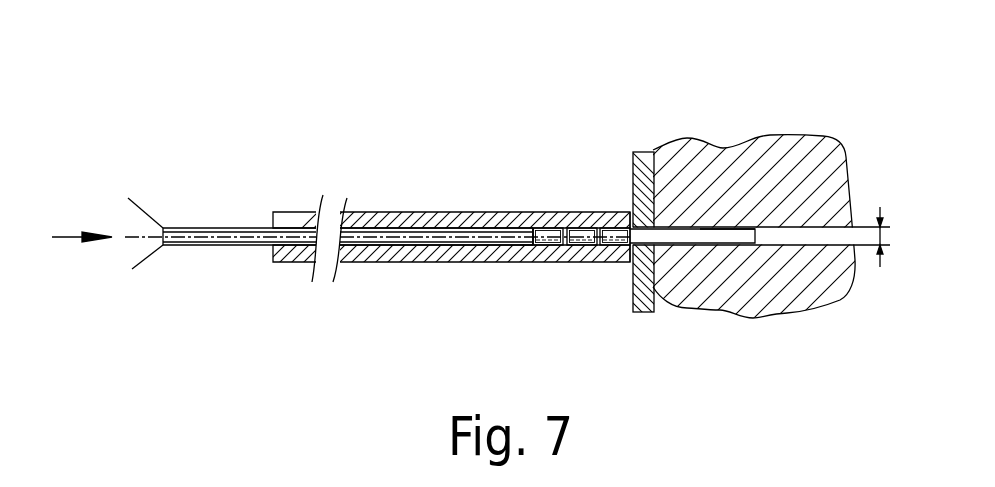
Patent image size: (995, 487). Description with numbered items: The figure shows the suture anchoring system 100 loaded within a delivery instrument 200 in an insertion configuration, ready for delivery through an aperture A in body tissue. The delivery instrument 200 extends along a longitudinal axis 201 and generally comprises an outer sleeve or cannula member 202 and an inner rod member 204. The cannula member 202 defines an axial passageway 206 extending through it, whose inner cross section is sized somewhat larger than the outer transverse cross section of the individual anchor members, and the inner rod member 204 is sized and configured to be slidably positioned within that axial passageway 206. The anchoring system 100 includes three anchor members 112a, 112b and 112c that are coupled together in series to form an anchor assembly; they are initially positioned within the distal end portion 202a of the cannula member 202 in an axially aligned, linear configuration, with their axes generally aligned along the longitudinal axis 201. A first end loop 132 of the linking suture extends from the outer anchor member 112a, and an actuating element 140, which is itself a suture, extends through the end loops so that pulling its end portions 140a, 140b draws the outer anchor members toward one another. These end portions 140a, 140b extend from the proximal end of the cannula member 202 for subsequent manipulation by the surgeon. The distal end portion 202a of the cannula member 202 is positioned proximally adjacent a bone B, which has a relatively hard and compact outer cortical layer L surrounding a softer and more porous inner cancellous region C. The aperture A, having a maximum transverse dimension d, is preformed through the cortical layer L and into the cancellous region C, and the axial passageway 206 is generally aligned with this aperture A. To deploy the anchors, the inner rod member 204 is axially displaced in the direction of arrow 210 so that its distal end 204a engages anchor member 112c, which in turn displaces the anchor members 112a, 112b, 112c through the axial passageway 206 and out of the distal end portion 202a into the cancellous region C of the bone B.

The suture anchoring system 100 is at (547, 183).
The outer anchor member 112a is at (615, 247).
The anchor member 112b is at (578, 247).
The outer anchor member 112c is at (537, 247).
The first end loop 132 is at (646, 213).
The actuating element 140 is at (577, 229).
The end portion of actuating element 140a is at (143, 212).
The end portion of actuating element 140b is at (150, 258).
The delivery instrument 200 is at (417, 160).
The longitudinal axis 201 is at (137, 236).
The cannula member 202 is at (372, 195).
The distal end portion of cannula member 202a is at (618, 180).
The inner rod member 204 is at (358, 213).
The distal end of inner rod member 204a is at (515, 257).
The axial passageway 206 is at (493, 232).
The arrow 210 is at (68, 238).
The aperture A is at (733, 230).
The bone B is at (866, 168).
The cancellous region C is at (803, 284).
The cortical layer L is at (655, 288).
The maximum transverse dimension d is at (771, 237).